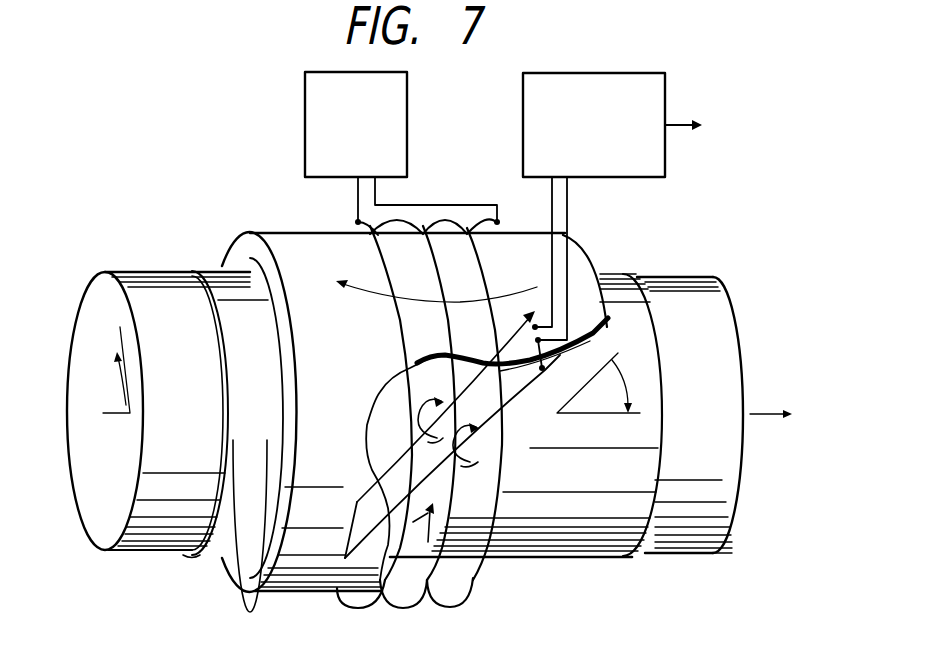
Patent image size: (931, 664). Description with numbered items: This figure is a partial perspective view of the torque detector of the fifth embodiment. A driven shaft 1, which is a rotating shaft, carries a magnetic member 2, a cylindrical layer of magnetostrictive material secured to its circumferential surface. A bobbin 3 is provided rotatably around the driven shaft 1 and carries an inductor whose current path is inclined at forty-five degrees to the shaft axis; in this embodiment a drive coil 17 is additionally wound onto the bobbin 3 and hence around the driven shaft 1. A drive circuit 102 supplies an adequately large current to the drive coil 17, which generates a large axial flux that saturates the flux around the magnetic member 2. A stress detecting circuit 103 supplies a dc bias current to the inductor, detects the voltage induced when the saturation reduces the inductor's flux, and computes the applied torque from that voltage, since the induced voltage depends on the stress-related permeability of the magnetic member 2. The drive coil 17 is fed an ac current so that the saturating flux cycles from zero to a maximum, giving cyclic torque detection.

The driven shaft 1 is at (672, 295).
The magnetic member 2 is at (623, 272).
The bobbin 3 is at (577, 268).
The drive coil 17 is at (480, 572).
The drive circuit 102 is at (303, 123).
The stress detecting circuit 103 is at (521, 123).